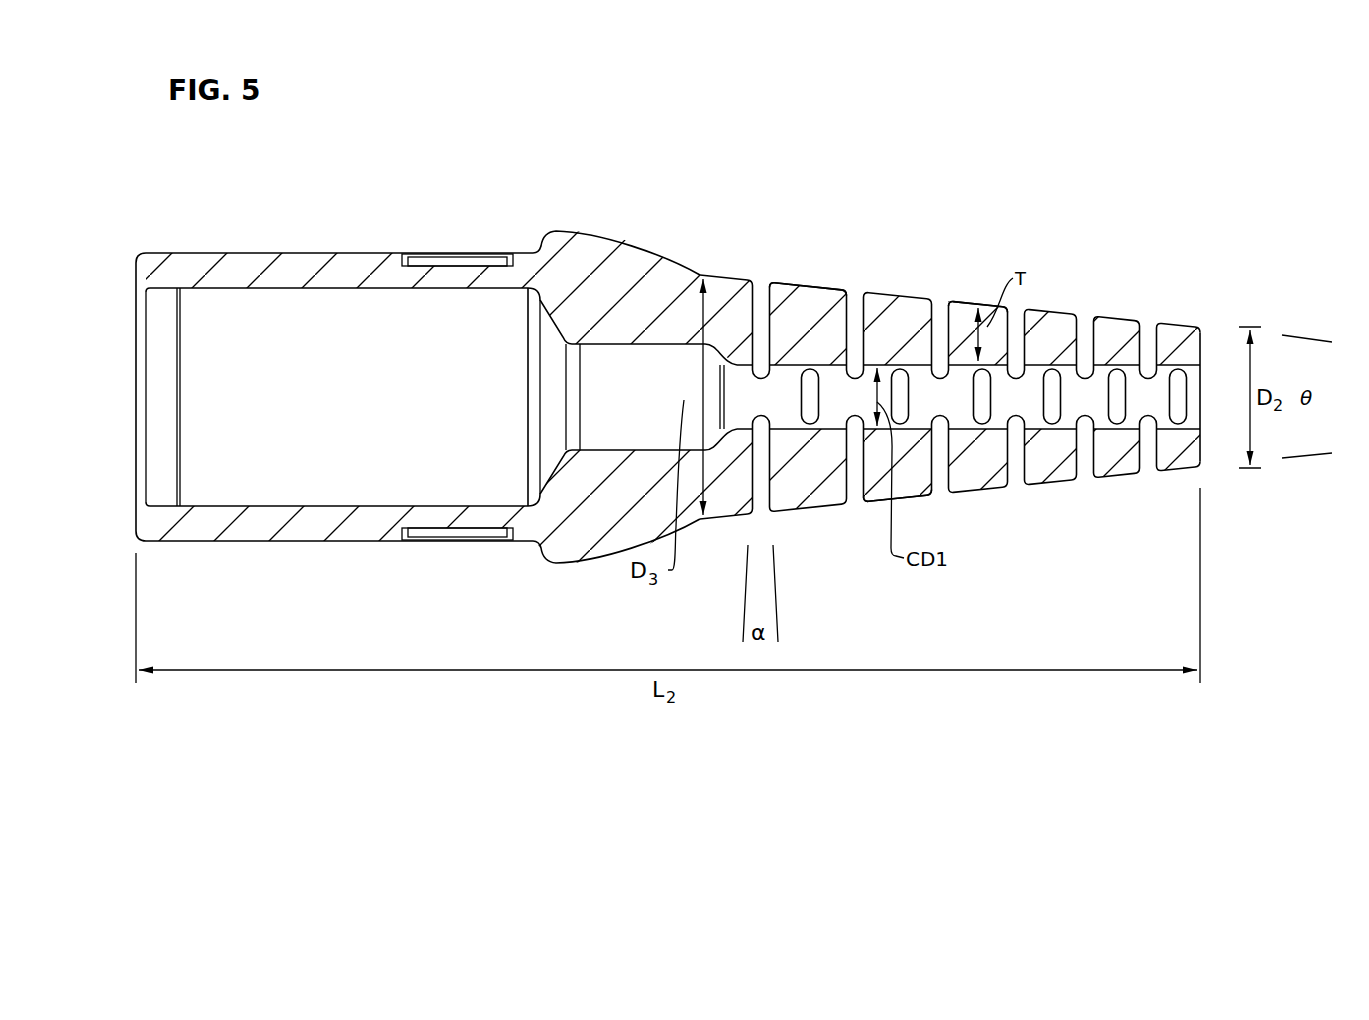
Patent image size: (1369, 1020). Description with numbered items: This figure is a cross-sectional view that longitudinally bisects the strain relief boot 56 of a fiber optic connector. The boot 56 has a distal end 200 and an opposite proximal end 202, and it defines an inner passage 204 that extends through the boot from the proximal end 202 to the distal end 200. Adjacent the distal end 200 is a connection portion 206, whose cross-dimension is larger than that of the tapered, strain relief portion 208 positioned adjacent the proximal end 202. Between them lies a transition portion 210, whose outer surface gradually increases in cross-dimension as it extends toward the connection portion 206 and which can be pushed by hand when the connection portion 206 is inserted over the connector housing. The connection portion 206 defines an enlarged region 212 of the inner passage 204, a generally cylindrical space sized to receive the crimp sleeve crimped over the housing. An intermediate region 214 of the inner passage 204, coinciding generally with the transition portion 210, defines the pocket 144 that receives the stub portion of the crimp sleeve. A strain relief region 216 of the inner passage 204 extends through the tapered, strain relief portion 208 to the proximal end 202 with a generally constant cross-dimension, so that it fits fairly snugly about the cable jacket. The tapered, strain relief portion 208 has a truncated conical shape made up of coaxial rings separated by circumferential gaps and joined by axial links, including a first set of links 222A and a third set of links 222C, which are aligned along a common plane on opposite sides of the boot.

The strain relief boot 56 is at (679, 356).
The pocket 144 is at (698, 398).
The distal end 200 is at (138, 535).
The proximal end 202 is at (1200, 336).
The inner passage 204 is at (797, 365).
The connection portion 206 is at (295, 253).
The tapered, strain relief portion 208 is at (967, 300).
The transition portion 210 is at (611, 243).
The enlarged region 212 is at (287, 290).
The intermediate region 214 is at (649, 348).
The strain relief region 216 is at (1000, 412).
The first set of links 222A is at (902, 295).
The third set of links 222C is at (912, 499).